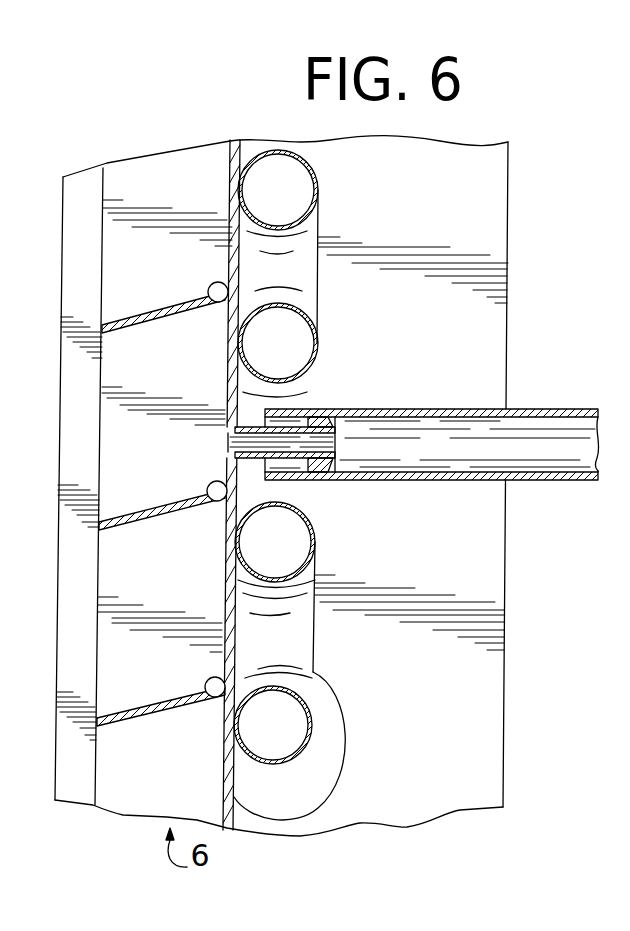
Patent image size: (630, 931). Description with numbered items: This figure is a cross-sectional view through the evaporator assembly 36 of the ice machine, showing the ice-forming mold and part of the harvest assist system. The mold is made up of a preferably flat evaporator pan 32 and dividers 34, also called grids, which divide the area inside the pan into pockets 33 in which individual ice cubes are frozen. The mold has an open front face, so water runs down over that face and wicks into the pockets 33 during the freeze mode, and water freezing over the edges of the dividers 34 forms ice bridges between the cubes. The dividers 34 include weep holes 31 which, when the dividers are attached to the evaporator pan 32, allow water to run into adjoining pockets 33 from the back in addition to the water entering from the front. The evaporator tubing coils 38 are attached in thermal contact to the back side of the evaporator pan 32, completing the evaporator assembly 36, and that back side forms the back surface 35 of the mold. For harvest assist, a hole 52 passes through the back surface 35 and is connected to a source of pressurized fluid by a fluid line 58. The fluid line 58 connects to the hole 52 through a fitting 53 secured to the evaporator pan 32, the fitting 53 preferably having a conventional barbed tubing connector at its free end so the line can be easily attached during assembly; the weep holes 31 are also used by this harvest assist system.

The weep hole 31 is at (217, 482).
The evaporator pan 32 is at (225, 178).
The pocket 33 is at (88, 549).
The divider 34 is at (145, 178).
The back surface 35 is at (262, 380).
The evaporator assembly 36 is at (517, 732).
The evaporator tubing coil 38 is at (310, 268).
The hole 52 is at (225, 442).
The fitting 53 is at (248, 428).
The fluid line 58 is at (543, 415).